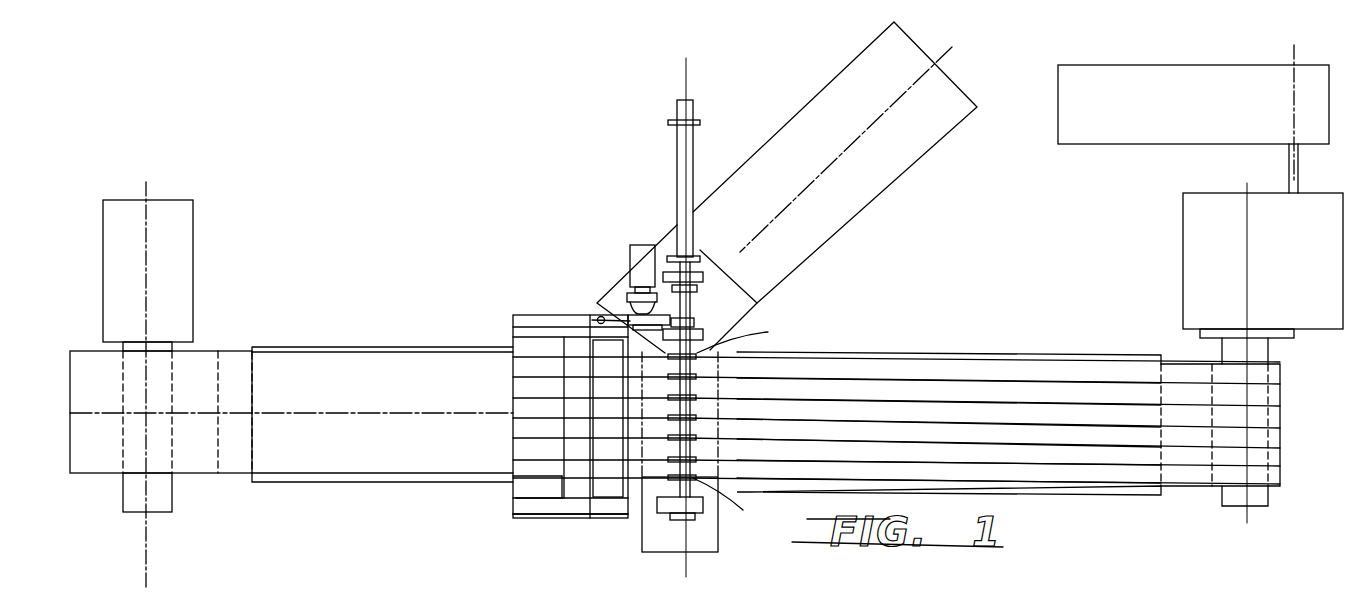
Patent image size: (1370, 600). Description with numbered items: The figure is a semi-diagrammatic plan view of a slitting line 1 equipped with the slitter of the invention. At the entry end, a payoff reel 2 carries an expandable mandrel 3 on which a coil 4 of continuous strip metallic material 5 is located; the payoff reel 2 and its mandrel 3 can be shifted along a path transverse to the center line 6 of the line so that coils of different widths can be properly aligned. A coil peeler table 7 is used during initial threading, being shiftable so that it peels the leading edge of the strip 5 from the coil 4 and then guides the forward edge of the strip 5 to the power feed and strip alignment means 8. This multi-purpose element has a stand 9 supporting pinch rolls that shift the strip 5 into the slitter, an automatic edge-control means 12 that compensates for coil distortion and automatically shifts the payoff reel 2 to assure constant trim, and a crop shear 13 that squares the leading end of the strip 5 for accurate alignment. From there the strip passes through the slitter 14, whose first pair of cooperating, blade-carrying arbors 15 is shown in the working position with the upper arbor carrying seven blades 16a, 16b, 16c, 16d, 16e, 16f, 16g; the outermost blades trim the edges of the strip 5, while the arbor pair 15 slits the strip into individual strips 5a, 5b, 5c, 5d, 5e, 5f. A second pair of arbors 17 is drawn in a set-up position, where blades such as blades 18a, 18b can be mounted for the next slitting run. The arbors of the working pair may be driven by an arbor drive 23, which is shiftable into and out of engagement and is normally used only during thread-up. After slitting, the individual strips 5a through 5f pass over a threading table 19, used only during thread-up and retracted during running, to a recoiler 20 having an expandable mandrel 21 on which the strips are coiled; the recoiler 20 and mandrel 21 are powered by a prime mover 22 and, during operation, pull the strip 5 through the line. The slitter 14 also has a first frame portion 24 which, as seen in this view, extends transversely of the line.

The slitting line 1 is at (807, 353).
The payoff reel 2 is at (185, 235).
The expandable mandrel 3 is at (163, 503).
The coil 4 is at (77, 405).
The continuous strip metallic material 5 is at (288, 360).
The individual strip 5a is at (882, 368).
The individual strip 5b is at (912, 388).
The individual strip 5c is at (943, 410).
The individual strip 5d is at (993, 432).
The individual strip 5e is at (1028, 450).
The individual strip 5f is at (1067, 476).
The center line 6 is at (338, 413).
The coil peeler table 7 is at (380, 347).
The power feed and strip alignment means 8 is at (542, 518).
The stand 9 is at (598, 520).
The automatic edge-control means 12 is at (517, 487).
The crop shear 13 is at (618, 490).
The slitter 14 is at (723, 510).
The first pair of cooperating arbors 15 is at (682, 492).
The blade 16a is at (640, 357).
The blade 16b is at (640, 377).
The blade 16c is at (640, 398).
The blade 16d is at (640, 418).
The blade 16e is at (640, 438).
The blade 16f is at (565, 460).
The blade 16g is at (640, 474).
The second pair of arbors 17 is at (676, 159).
The blade 18a is at (703, 122).
The blade 18b is at (700, 257).
The threading table 19 is at (987, 495).
The recoiler 20 is at (1196, 247).
The expandable mandrel 21 is at (1224, 505).
The prime mover 22 is at (1058, 130).
The arbor drive 23 is at (630, 260).
The first frame portion 24 is at (692, 552).